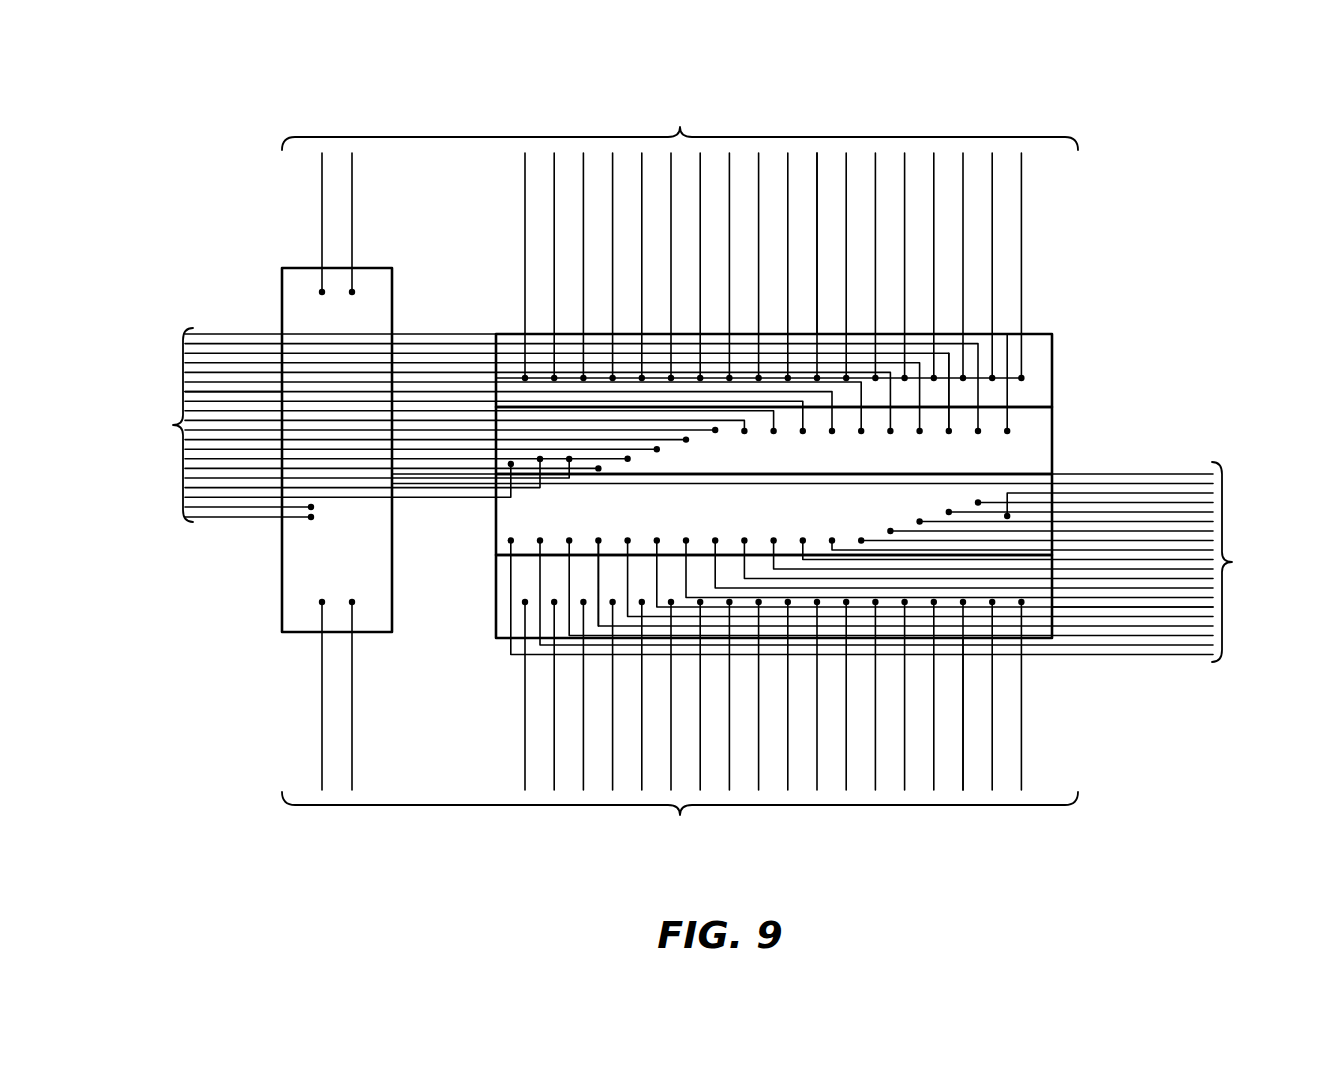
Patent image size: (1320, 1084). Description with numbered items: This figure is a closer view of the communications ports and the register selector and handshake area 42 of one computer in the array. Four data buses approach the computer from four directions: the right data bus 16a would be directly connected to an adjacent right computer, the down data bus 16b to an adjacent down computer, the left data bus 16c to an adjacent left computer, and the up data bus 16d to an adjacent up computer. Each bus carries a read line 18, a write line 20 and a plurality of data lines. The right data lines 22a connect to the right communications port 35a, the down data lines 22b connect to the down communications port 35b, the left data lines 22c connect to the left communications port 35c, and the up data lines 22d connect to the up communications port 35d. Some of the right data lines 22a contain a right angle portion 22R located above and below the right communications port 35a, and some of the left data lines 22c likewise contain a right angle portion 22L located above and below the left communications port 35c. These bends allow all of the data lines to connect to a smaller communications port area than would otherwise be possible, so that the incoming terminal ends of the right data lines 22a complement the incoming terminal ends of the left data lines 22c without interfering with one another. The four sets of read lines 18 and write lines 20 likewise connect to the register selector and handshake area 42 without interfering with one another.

The right data bus 16a is at (838, 562).
The down data bus 16b is at (680, 730).
The left data bus 16c is at (557, 425).
The up data bus 16d is at (680, 236).
The read line 18 is at (322, 203).
The write line 20 is at (352, 197).
The right data lines 22a is at (1152, 606).
The down data lines 22b is at (965, 718).
The left data lines 22c is at (215, 392).
The up data lines 22d is at (818, 180).
The right angle portion 22L is at (948, 388).
The right angle portion 22R is at (598, 542).
The right communications port 35a is at (496, 526).
The down communications port 35b is at (496, 590).
The left communications port 35c is at (1052, 425).
The up communications port 35d is at (1052, 355).
The register selector and handshake area 42 is at (348, 332).